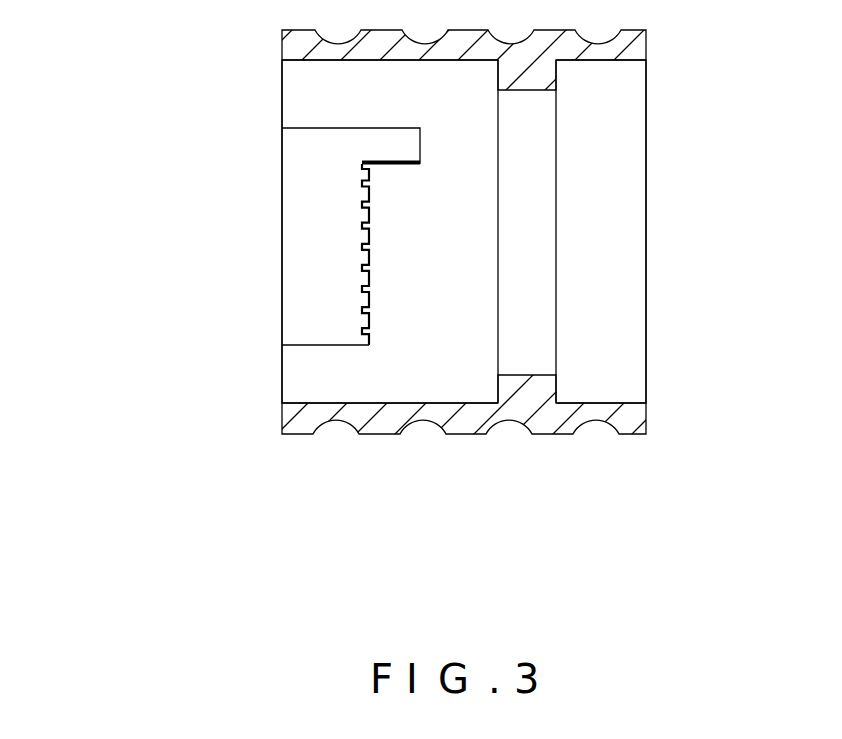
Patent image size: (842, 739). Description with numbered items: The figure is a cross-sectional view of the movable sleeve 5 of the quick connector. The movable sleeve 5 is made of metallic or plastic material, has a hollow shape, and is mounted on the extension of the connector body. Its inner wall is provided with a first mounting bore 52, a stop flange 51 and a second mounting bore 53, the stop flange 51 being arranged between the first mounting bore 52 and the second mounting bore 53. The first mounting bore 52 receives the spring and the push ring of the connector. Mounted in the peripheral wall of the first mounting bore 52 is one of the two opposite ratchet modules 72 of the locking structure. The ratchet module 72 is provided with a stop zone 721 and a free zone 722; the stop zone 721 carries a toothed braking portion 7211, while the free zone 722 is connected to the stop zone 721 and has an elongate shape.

The movable sleeve 5 is at (690, 94).
The stop flange 51 is at (543, 216).
The first mounting bore 52 is at (302, 367).
The second mounting bore 53 is at (613, 307).
The ratchet module 72 is at (236, 239).
The stop zone 721 is at (237, 257).
The toothed braking portion 7211 is at (361, 290).
The free zone 722 is at (382, 148).